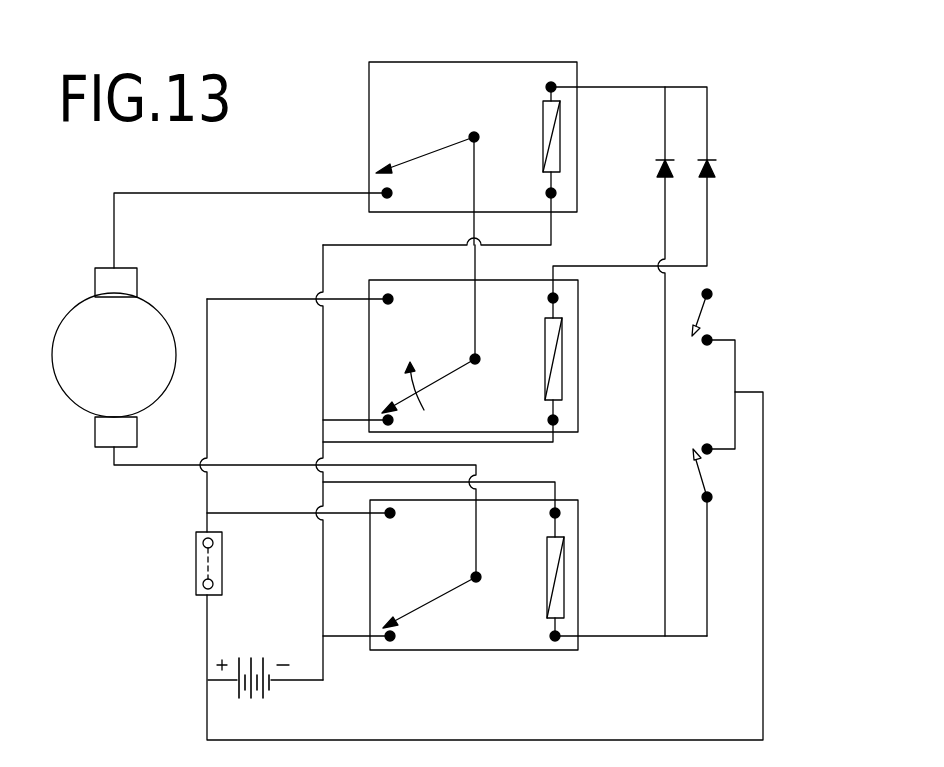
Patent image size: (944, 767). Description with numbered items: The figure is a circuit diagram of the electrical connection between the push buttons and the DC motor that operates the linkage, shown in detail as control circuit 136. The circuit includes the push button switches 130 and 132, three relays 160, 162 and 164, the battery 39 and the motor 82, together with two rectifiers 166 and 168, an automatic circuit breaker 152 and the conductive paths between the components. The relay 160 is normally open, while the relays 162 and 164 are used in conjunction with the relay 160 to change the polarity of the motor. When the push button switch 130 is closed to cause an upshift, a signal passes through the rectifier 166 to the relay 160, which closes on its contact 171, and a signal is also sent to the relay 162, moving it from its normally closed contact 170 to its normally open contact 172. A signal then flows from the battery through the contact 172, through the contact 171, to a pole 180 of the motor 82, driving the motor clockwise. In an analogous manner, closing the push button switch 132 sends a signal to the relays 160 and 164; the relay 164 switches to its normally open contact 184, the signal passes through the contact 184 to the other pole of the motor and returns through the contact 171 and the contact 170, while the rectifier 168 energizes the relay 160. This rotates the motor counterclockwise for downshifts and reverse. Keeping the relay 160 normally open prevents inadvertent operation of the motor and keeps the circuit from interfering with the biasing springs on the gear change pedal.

The battery 39 is at (243, 658).
The motor 82 is at (148, 318).
The push button switch 130 is at (700, 327).
The push button switch 132 is at (708, 461).
The control circuit 136 is at (582, 46).
The automatic circuit breaker 152 is at (215, 558).
The relay 160 is at (443, 135).
The relay 162 is at (484, 349).
The relay 164 is at (494, 581).
The rectifier 166 is at (716, 169).
The rectifier 168 is at (656, 170).
The normally closed contact 170 is at (390, 425).
The contact 171 is at (385, 197).
The normally open contact 172 is at (390, 303).
The pole 180 is at (130, 282).
The normally open contact 184 is at (391, 517).